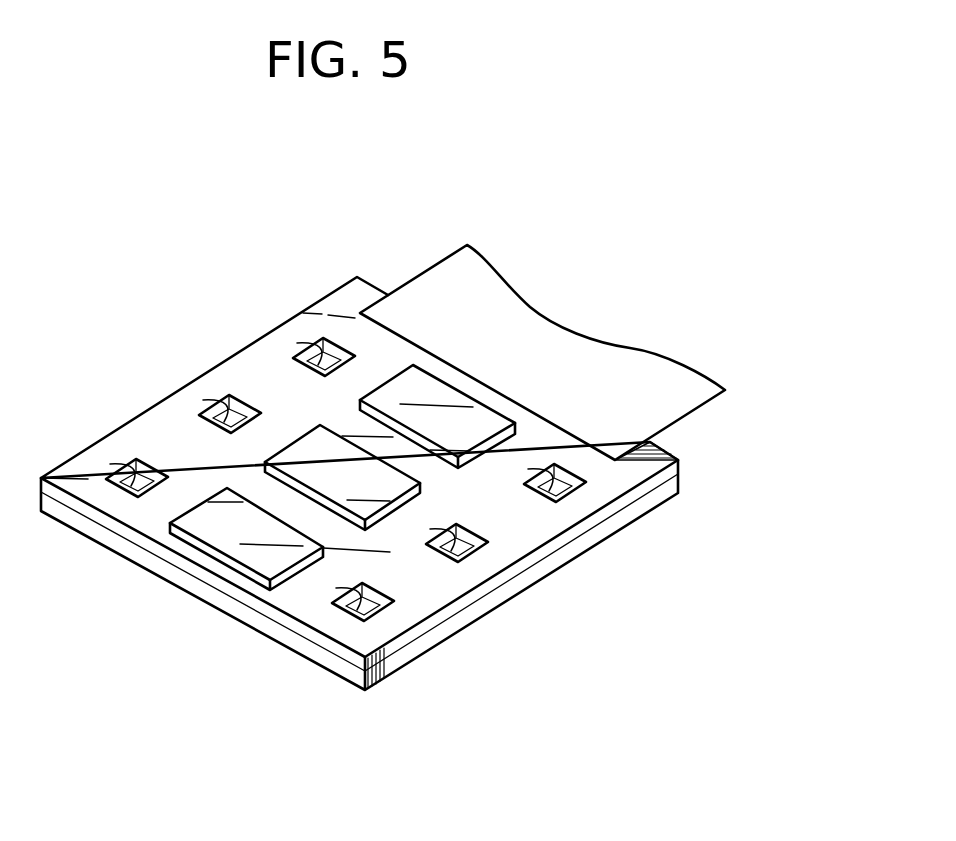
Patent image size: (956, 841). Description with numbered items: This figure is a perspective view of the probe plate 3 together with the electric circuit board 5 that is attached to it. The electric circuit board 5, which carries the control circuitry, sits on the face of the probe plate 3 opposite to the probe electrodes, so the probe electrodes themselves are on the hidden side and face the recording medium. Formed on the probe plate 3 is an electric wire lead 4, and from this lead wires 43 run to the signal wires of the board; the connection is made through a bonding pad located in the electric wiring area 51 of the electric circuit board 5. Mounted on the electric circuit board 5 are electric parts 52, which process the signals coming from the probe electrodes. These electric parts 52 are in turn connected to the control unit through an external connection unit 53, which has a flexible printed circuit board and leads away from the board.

The probe plate 3 is at (523, 586).
The electric wire lead 4 is at (143, 478).
The lead wires 43 is at (130, 478).
The electric circuit board 5 is at (590, 527).
The electric wiring area 51 is at (308, 607).
The electric parts 52 is at (217, 532).
The external connection unit 53 is at (567, 348).